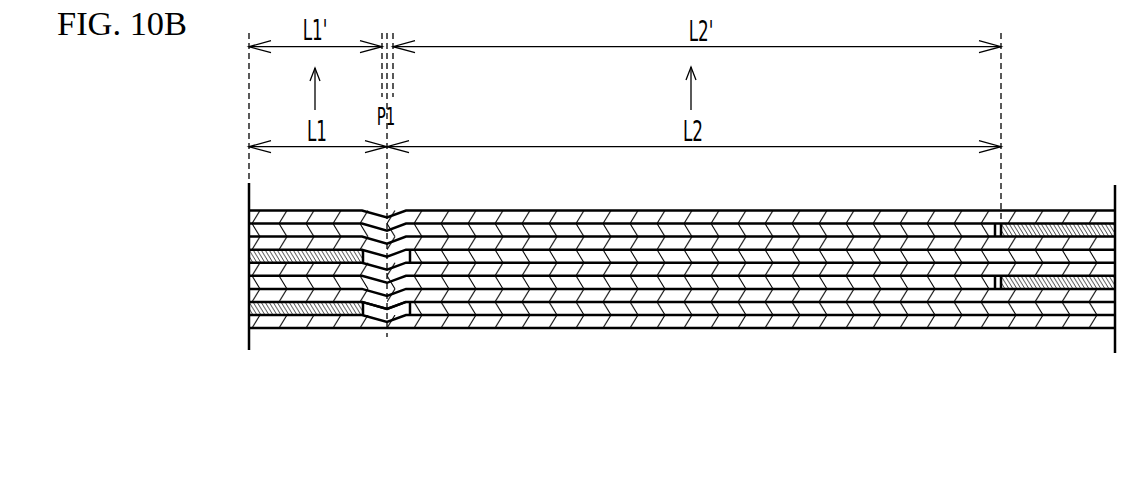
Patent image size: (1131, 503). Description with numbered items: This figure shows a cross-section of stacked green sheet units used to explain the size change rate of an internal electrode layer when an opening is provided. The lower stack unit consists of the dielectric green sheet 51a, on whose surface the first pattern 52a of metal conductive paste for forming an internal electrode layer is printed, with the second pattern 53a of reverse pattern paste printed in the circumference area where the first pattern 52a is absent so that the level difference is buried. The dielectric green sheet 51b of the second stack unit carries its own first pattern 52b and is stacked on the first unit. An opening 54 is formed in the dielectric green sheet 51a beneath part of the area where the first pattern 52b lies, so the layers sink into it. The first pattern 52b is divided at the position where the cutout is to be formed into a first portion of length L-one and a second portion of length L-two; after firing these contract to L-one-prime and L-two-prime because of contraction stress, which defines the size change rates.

The dielectric green sheet 51a is at (263, 328).
The dielectric green sheet 51b is at (249, 298).
The first pattern 52a is at (432, 310).
The first pattern 52b is at (249, 266).
The second pattern 53a is at (328, 312).
The opening 54 is at (398, 312).